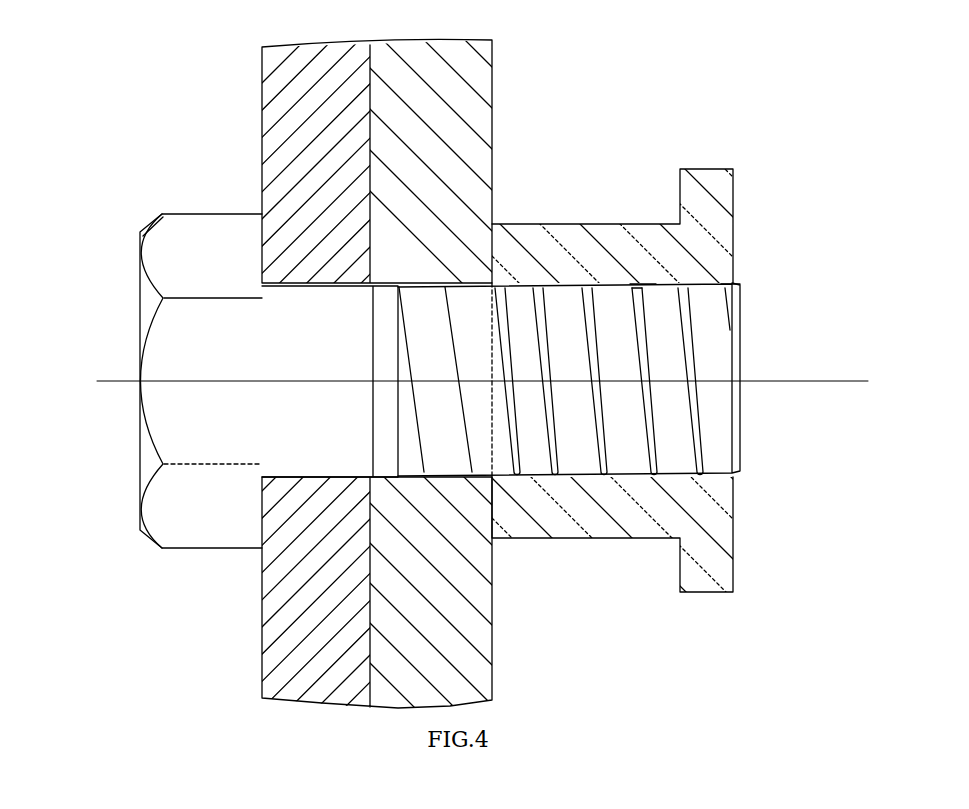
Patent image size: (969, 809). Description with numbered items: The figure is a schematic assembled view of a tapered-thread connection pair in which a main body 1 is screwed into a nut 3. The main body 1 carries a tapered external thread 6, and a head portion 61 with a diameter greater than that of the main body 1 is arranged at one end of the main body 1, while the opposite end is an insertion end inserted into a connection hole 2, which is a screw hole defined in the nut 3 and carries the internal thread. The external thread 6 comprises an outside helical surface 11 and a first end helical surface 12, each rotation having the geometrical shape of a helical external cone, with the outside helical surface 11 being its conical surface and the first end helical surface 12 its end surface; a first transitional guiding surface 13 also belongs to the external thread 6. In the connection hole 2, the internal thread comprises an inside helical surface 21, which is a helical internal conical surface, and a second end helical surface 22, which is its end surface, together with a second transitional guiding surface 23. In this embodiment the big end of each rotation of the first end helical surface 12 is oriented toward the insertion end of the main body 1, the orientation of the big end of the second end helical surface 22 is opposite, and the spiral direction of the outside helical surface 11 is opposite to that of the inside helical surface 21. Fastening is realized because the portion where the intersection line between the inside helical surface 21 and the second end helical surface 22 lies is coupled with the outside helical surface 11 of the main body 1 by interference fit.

The main body 1 is at (429, 384).
The head portion 61 is at (242, 273).
The connection hole 2 is at (612, 404).
The nut 3 is at (705, 200).
The external thread 6 is at (625, 318).
The outside helical surface 11 is at (563, 285).
The first end helical surface 12 is at (613, 430).
The first transitional guiding surface 13 is at (643, 283).
The inside helical surface 21 is at (512, 283).
The second end helical surface 22 is at (687, 350).
The second transitional guiding surface 23 is at (726, 283).